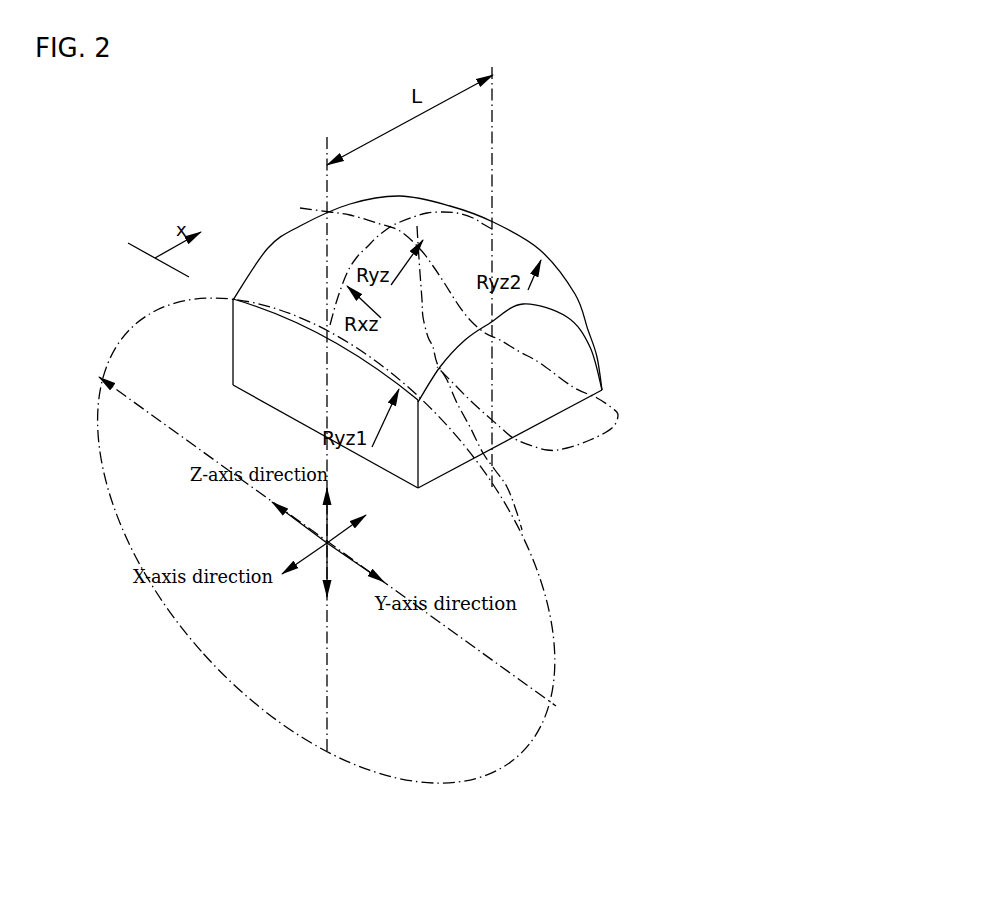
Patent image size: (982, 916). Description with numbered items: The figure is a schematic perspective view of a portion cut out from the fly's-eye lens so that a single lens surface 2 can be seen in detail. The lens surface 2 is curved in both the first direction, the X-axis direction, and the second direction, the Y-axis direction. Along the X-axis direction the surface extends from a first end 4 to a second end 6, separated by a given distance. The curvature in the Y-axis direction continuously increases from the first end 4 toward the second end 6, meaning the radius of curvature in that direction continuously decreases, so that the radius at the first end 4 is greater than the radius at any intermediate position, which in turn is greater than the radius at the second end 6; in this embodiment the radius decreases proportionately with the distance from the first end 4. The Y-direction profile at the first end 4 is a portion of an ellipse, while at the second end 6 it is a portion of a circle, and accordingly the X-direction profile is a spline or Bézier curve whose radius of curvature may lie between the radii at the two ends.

The lens surface 2 is at (303, 257).
The first end 4 is at (251, 358).
The second end 6 is at (584, 304).